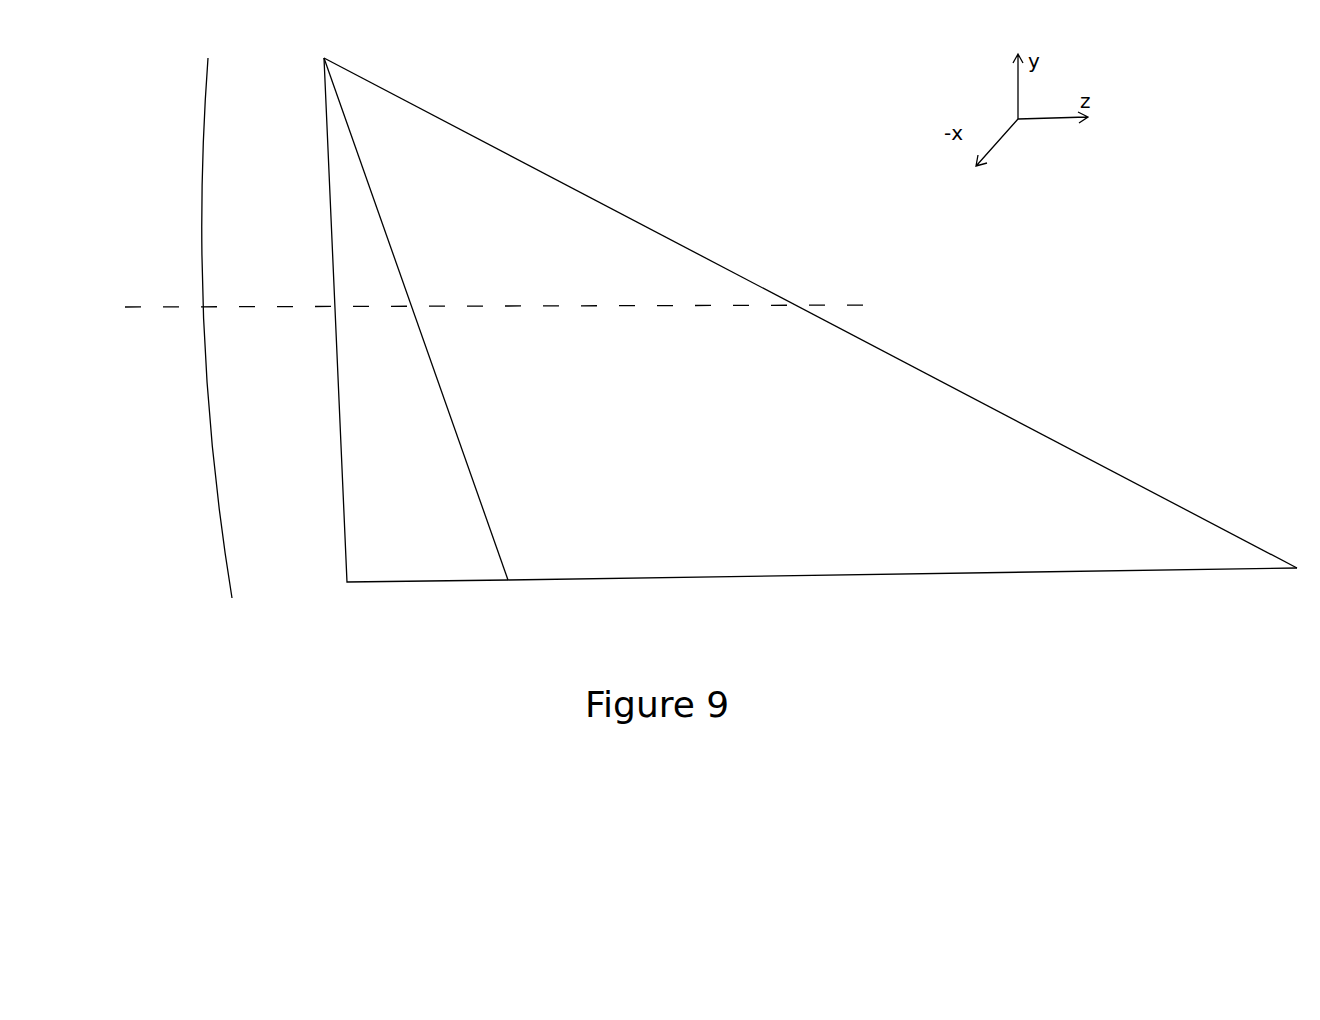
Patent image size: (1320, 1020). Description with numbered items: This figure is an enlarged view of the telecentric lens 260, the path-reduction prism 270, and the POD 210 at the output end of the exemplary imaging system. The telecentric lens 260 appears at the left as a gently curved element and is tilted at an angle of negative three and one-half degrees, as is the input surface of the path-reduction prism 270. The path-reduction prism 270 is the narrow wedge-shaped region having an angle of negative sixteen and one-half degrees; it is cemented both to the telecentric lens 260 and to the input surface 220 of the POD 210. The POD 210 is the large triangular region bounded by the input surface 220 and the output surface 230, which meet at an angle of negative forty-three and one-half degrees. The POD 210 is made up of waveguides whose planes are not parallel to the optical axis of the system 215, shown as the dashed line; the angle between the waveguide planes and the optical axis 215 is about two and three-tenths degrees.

The POD 210 is at (752, 520).
The optical axis of the system 215 is at (900, 303).
The input surface of the POD 220 is at (495, 548).
The output surface of the POD 230 is at (1178, 505).
The telecentric lens 260 is at (228, 570).
The path-reduction prism 270 is at (426, 523).